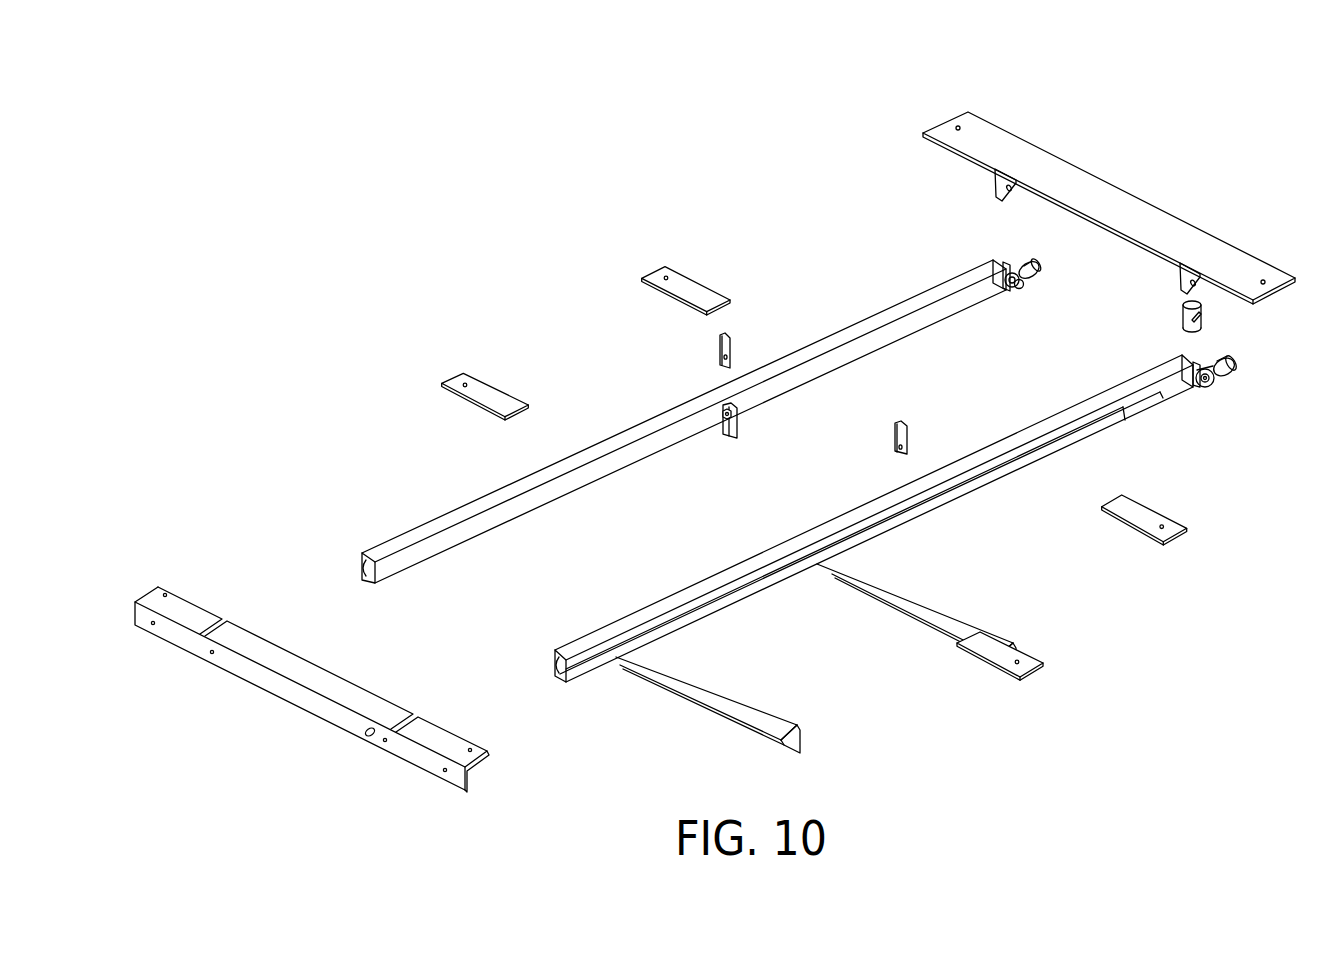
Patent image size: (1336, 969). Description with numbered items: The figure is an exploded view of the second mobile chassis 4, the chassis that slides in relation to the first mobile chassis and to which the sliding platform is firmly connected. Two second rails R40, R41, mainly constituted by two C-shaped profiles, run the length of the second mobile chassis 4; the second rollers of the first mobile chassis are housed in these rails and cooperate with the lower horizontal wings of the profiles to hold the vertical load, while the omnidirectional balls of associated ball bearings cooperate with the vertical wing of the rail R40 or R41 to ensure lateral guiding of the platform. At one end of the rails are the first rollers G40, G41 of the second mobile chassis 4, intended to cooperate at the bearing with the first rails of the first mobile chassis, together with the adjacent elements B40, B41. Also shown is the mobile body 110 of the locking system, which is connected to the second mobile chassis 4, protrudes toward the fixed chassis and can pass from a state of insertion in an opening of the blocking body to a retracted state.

The second mobile chassis 4 is at (1209, 105).
The second rail R40 is at (618, 457).
The second rail R41 is at (758, 577).
The first roller G40 is at (1035, 304).
The first roller G41 is at (1218, 401).
The first roller B40 is at (1037, 271).
The second roller B41 is at (1232, 367).
The mobile body 110 is at (1207, 328).